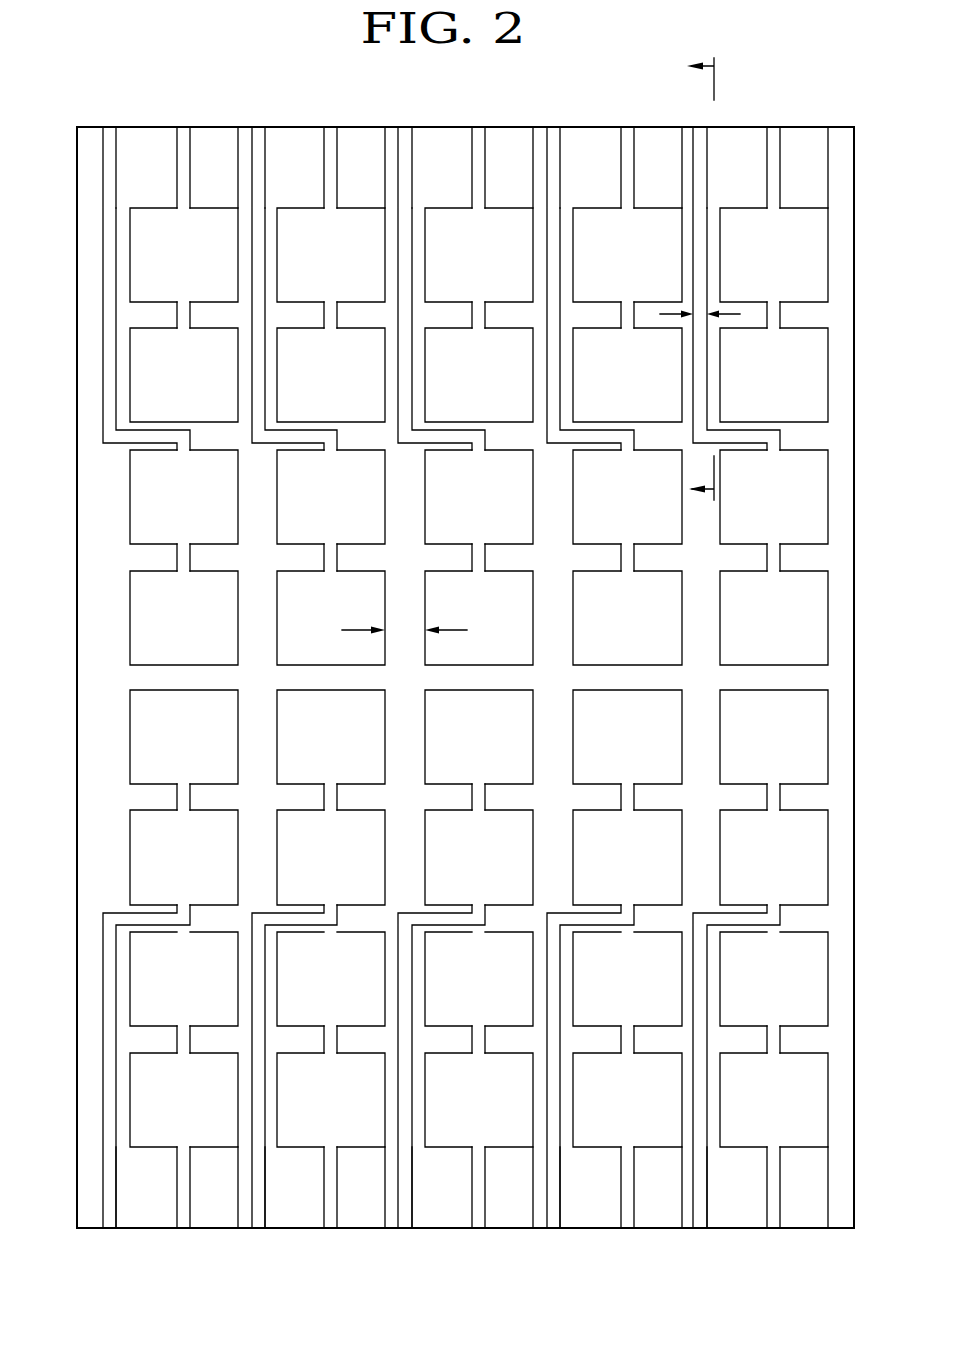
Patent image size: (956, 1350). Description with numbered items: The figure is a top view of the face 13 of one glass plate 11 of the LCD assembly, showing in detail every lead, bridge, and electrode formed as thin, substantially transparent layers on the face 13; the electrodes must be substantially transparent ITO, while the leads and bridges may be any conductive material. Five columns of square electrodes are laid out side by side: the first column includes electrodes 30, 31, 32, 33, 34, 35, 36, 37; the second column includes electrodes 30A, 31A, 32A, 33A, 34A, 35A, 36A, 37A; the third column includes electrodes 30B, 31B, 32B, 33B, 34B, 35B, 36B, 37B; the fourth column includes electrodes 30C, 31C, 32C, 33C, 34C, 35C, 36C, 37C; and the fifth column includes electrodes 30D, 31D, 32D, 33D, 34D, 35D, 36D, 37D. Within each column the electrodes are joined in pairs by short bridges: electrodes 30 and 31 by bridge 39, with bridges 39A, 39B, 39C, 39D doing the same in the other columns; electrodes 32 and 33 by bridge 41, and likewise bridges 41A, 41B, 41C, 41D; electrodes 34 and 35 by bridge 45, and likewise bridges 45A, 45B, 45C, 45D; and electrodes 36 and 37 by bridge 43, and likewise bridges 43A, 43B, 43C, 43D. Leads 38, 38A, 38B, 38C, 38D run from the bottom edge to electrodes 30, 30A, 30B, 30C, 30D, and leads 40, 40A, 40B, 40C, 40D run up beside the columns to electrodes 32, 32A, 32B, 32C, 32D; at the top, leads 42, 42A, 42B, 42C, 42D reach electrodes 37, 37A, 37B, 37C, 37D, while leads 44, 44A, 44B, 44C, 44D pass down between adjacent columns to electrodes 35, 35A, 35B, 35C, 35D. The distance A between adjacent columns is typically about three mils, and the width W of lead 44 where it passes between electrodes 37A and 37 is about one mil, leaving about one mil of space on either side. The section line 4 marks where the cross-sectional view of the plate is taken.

The glass plate 11 is at (67, 311).
The face 13 is at (103, 543).
The section line 4- 4 is at (700, 277).
The width W is at (740, 314).
The distance A is at (448, 632).
The electrode 30 is at (776, 1092).
The electrode 30A is at (622, 1092).
The electrode 30B is at (474, 1092).
The electrode 30C is at (326, 1092).
The electrode 30D is at (179, 1092).
The electrode 31 is at (776, 971).
The electrode 31A is at (622, 971).
The electrode 31B is at (474, 971).
The electrode 31C is at (326, 971).
The electrode 31D is at (179, 971).
The electrode 32 is at (776, 849).
The electrode 32A is at (622, 849).
The electrode 32B is at (474, 849).
The electrode 32C is at (326, 849).
The electrode 32D is at (179, 849).
The electrode 33 is at (776, 729).
The electrode 33A is at (622, 729).
The electrode 33B is at (474, 729).
The electrode 33C is at (326, 729).
The electrode 33D is at (179, 729).
The electrode 34 is at (776, 610).
The electrode 34A is at (622, 610).
The electrode 34B is at (474, 610).
The electrode 34C is at (326, 610).
The electrode 34D is at (179, 610).
The electrode 35 is at (776, 489).
The electrode 35A is at (622, 489).
The electrode 35B is at (474, 489).
The electrode 35C is at (326, 489).
The electrode 35D is at (179, 489).
The electrode 36 is at (776, 369).
The electrode 36A is at (622, 369).
The electrode 36B is at (474, 369).
The electrode 36C is at (326, 369).
The electrode 36D is at (179, 369).
The electrode 37 is at (776, 246).
The electrode 37A is at (622, 246).
The electrode 37B is at (474, 246).
The electrode 37C is at (326, 246).
The electrode 37D is at (179, 246).
The lead 38 is at (782, 1193).
The lead 38A is at (635, 1193).
The lead 38B is at (487, 1193).
The lead 38C is at (339, 1193).
The lead 38D is at (192, 1193).
The bridge 39 is at (776, 1022).
The bridge 39A is at (629, 1022).
The bridge 39B is at (481, 1022).
The bridge 39C is at (333, 1022).
The bridge 39D is at (186, 1022).
The lead 40 is at (708, 1193).
The lead 40A is at (561, 1193).
The lead 40B is at (413, 1193).
The lead 40C is at (265, 1193).
The lead 40D is at (118, 1193).
The bridge 41 is at (776, 782).
The bridge 41A is at (629, 782).
The bridge 41B is at (481, 782).
The bridge 41C is at (333, 782).
The bridge 41D is at (186, 782).
The lead 42 is at (782, 174).
The lead 42A is at (635, 174).
The lead 42B is at (487, 174).
The lead 42C is at (339, 174).
The lead 42D is at (192, 174).
The bridge 43 is at (776, 299).
The bridge 43A is at (629, 299).
The bridge 43B is at (481, 299).
The bridge 43C is at (333, 299).
The bridge 43D is at (186, 299).
The lead 44 is at (707, 174).
The lead 44A is at (560, 174).
The lead 44B is at (412, 174).
The lead 44C is at (264, 174).
The lead 44D is at (117, 174).
The bridge 45 is at (776, 542).
The bridge 45A is at (629, 542).
The bridge 45B is at (481, 542).
The bridge 45C is at (333, 542).
The bridge 45D is at (186, 542).